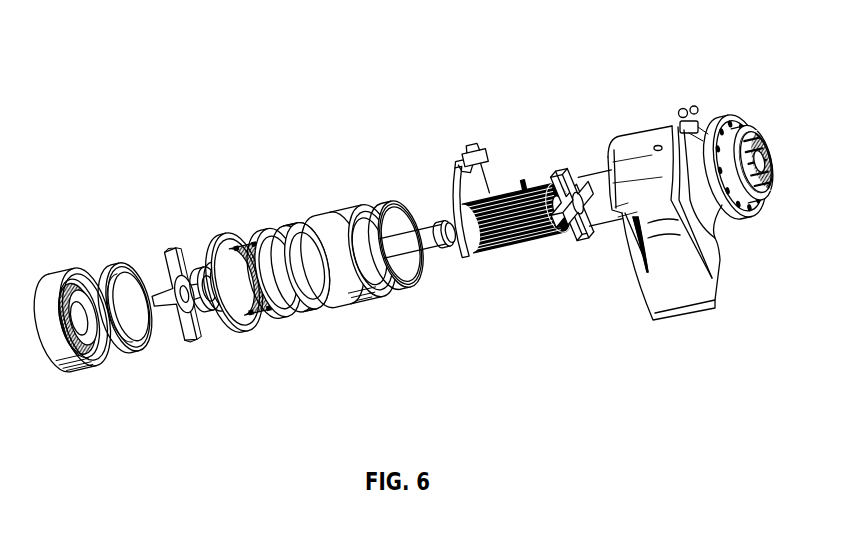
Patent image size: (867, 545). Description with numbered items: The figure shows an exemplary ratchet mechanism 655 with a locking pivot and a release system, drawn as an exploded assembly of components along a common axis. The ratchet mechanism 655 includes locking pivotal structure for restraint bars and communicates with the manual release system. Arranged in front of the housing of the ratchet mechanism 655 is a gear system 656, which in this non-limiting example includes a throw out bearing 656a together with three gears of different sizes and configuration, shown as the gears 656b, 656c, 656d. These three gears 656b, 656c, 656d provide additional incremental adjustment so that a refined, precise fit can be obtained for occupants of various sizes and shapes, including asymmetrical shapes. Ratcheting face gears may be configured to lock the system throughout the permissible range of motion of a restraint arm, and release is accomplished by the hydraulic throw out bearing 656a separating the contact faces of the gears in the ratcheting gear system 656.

The ratchet mechanism 655 is at (758, 114).
The gear system 656 is at (314, 266).
The throw out bearing 656a is at (367, 296).
The gear 656b is at (324, 305).
The gear 656c is at (302, 306).
The gear 656d is at (283, 327).